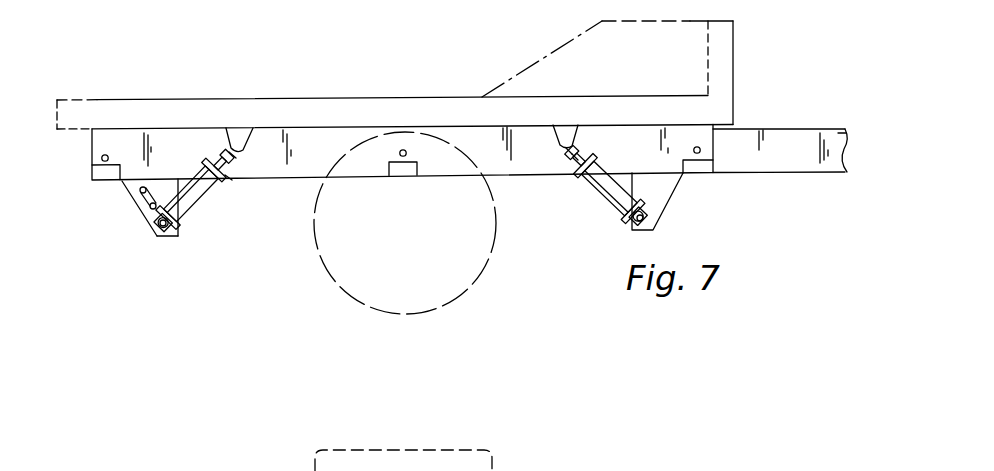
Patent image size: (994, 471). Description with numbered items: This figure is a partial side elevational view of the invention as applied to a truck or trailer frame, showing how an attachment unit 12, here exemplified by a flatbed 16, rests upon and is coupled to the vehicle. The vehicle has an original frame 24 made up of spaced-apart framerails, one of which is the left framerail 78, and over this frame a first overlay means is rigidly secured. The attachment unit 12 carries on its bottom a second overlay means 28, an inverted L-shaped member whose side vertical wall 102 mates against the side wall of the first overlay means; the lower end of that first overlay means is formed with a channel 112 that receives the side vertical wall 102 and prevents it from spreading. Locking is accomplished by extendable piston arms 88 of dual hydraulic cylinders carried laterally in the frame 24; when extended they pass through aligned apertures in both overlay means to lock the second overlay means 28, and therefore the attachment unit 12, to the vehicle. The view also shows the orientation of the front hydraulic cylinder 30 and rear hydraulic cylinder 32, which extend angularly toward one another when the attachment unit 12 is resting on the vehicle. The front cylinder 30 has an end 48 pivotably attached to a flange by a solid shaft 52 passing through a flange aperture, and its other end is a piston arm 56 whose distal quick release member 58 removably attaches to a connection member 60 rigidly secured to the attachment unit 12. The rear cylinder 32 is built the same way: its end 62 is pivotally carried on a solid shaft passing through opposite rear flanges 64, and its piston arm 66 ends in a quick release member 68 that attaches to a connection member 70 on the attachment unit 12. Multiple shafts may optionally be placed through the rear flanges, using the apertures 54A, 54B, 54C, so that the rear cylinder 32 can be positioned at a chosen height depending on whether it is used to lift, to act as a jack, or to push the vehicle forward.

The attachment unit 12 is at (735, 48).
The flatbed 16 is at (734, 31).
The original frame 24 is at (791, 131).
The second overlay means 28 is at (190, 129).
The front hydraulic cylinder 30 is at (598, 198).
The rear hydraulic cylinder 32 is at (196, 196).
The end of front hydraulic cylinder 48 is at (655, 228).
The solid shaft 52 is at (640, 228).
The aperture 54A is at (139, 190).
The aperture 54B is at (180, 216).
The aperture 54C is at (177, 238).
The piston arm 56 is at (576, 176).
The quick release member 58 is at (582, 140).
The connection member 60 is at (566, 138).
The end of rear hydraulic cylinder 62 is at (159, 228).
The rear flange 64 is at (148, 214).
The piston arm 66 is at (232, 178).
The quick release member 68 is at (241, 152).
The connection member 70 is at (238, 140).
The left framerail 78 is at (818, 133).
The extendable piston arm 88 is at (103, 155).
The side vertical wall 102 is at (445, 132).
The channel 112 is at (92, 170).